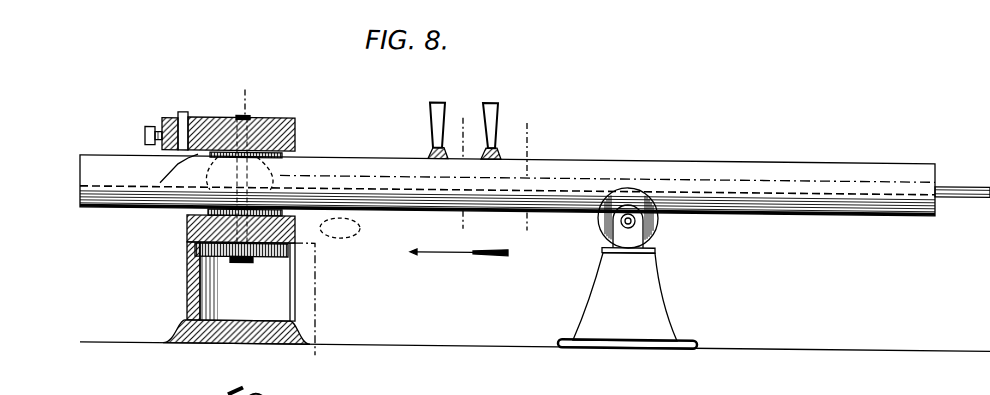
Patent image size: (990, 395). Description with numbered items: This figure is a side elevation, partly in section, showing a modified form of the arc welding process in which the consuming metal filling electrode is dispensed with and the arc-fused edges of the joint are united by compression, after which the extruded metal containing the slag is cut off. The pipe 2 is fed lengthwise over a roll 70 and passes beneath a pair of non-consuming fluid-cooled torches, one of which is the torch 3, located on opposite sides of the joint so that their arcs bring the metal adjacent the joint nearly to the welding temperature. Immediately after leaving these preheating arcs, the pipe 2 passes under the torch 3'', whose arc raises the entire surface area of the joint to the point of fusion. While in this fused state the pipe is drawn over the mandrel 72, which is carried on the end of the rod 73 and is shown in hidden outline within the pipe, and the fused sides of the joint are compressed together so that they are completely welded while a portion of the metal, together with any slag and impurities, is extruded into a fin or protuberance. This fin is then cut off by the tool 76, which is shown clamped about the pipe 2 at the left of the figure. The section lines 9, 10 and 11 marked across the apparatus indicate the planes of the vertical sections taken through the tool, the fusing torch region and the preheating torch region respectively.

The pipe 2 is at (863, 198).
The rod 73 is at (980, 185).
The tool 76 is at (185, 113).
The section line 9— 9 is at (236, 104).
The torch 3'' is at (416, 130).
The torch 3 is at (497, 131).
The section line 11— 11 is at (473, 137).
The section line 10— 10 is at (517, 136).
The roll 70 is at (658, 223).
The mandrel 72 is at (310, 210).